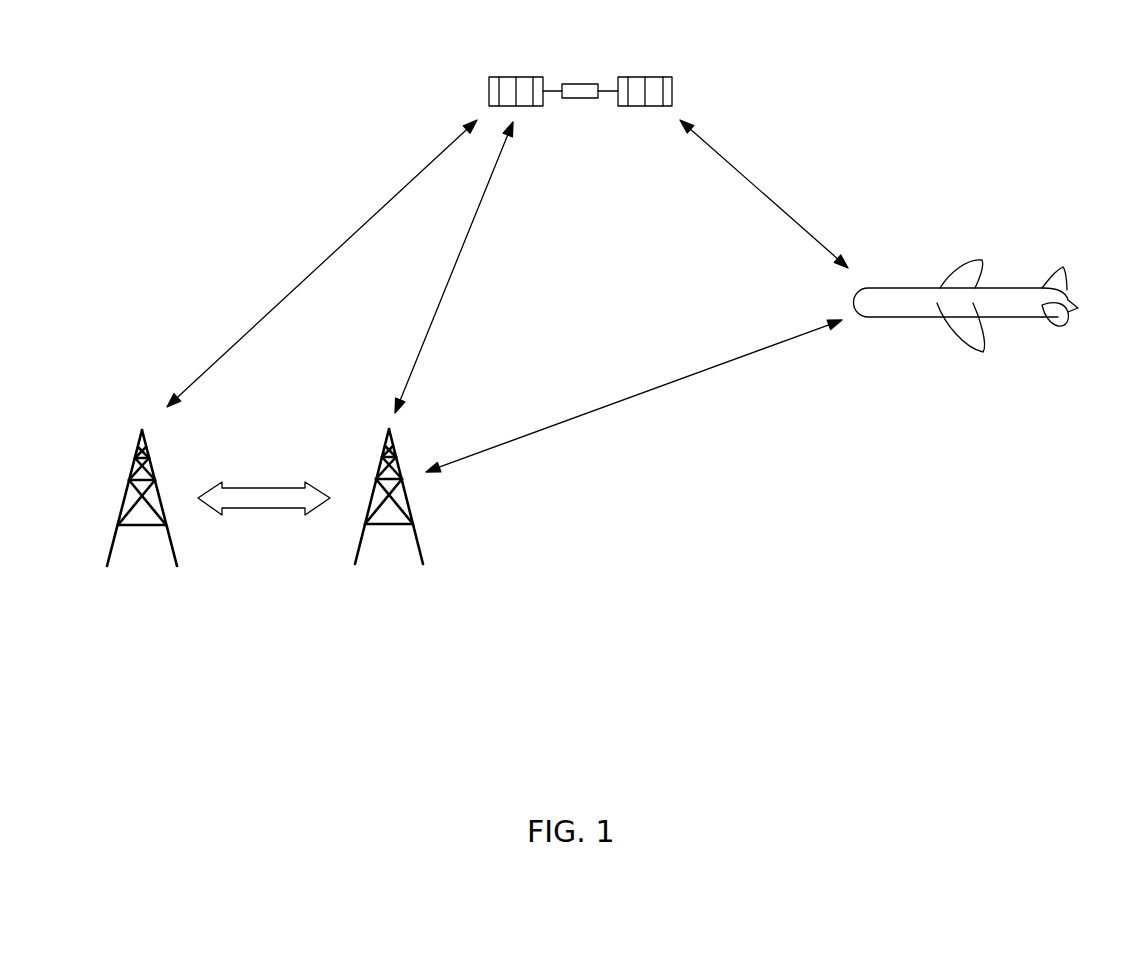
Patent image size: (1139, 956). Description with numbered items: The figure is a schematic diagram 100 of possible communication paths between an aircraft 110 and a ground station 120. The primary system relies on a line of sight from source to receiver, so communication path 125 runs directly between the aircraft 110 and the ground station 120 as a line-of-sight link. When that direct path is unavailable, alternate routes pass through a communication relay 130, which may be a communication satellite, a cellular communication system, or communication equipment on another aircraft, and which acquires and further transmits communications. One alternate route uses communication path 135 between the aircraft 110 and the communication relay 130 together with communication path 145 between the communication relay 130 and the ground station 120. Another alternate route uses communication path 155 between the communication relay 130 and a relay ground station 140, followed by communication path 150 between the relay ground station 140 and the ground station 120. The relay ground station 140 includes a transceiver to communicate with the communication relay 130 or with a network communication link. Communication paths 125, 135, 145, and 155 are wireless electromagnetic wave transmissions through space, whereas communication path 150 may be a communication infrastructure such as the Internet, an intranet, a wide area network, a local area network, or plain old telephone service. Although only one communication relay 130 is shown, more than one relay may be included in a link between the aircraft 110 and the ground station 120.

The communication system 100 is at (203, 68).
The aircraft 110 is at (894, 320).
The ground station 120 is at (417, 570).
The communication path 125 is at (688, 373).
The communication relay 130 is at (680, 88).
The communication path 135 is at (740, 177).
The relay ground station 140 is at (172, 568).
The communication path 145 is at (447, 288).
The communication path 150 is at (249, 507).
The communication path 155 is at (330, 253).